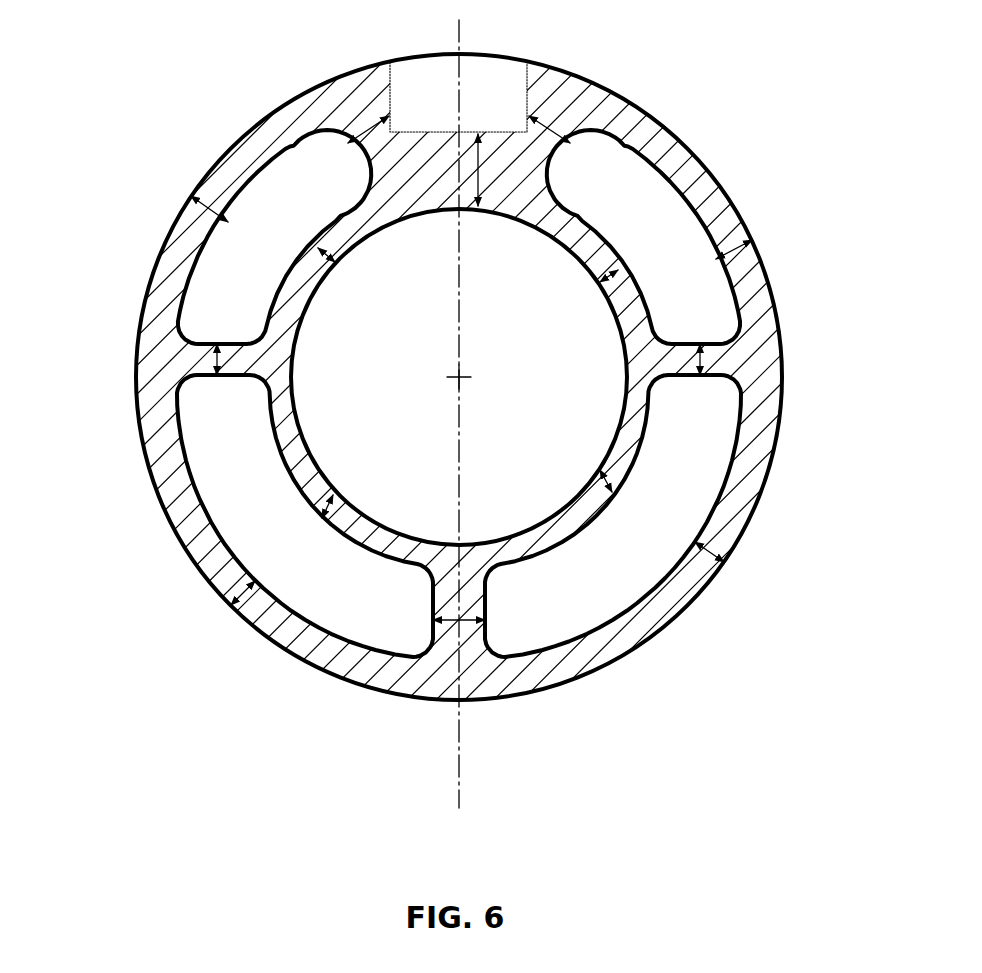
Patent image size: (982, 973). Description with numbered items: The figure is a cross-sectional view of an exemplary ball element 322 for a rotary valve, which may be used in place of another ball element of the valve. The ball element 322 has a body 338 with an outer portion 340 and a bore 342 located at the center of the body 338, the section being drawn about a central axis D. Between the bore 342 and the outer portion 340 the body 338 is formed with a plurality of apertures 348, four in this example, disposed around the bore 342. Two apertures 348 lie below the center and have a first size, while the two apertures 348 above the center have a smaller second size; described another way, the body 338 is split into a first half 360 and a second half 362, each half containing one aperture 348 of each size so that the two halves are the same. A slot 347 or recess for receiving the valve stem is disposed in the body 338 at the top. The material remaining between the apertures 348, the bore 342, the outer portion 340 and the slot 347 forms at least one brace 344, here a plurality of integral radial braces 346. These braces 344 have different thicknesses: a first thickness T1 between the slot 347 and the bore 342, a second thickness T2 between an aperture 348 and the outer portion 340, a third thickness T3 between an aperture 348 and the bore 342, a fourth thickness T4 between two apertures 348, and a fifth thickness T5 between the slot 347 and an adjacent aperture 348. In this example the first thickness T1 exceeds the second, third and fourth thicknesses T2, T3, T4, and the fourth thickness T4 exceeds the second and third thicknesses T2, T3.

The ball element 322 is at (128, 110).
The body 338 is at (158, 430).
The outer portion 340 is at (205, 562).
The bore 342 is at (300, 632).
The brace 344 is at (448, 168).
The plurality of braces 346 is at (437, 650).
The slot 347 is at (388, 100).
The aperture 348 is at (262, 185).
The first half 360 is at (763, 355).
The second half 362 is at (165, 312).
The first thickness T1 is at (497, 170).
The second thickness T2 is at (185, 207).
The third thickness T3 is at (328, 256).
The fourth thickness T4 is at (210, 360).
The fifth thickness T5 is at (345, 125).
The axis D is at (459, 418).